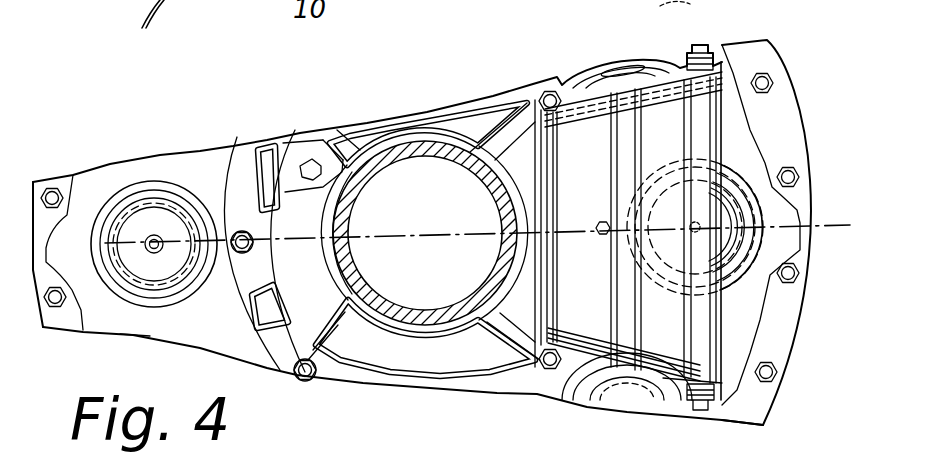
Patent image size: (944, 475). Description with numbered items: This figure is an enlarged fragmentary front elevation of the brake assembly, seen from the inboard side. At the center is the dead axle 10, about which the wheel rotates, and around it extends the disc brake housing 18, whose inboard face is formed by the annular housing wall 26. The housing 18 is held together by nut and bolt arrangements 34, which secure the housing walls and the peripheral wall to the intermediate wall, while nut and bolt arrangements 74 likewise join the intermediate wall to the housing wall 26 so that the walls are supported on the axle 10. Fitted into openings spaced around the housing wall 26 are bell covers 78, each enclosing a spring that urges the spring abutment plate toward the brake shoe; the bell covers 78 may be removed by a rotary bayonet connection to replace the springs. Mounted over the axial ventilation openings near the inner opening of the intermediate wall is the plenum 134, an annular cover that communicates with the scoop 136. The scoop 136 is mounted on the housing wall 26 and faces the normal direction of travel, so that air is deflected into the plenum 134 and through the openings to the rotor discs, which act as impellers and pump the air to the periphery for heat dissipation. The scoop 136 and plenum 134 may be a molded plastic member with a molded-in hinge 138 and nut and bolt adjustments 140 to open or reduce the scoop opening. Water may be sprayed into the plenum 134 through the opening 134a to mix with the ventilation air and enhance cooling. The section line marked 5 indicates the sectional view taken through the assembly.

The section line 5- 5 is at (142, 264).
The axle 10 is at (402, 312).
The disc brake housing 18 is at (785, 60).
The annular housing wall 26 is at (743, 123).
The nut and bolt arrangements 34 is at (797, 280).
The nut and bolt arrangements 74 is at (240, 255).
The bell cover 78 is at (120, 275).
The plenum 134 is at (453, 378).
The opening 134a is at (311, 159).
The scoop 136 is at (735, 327).
The hinge 138 is at (540, 345).
The nut and bolt adjustments 140 is at (702, 44).